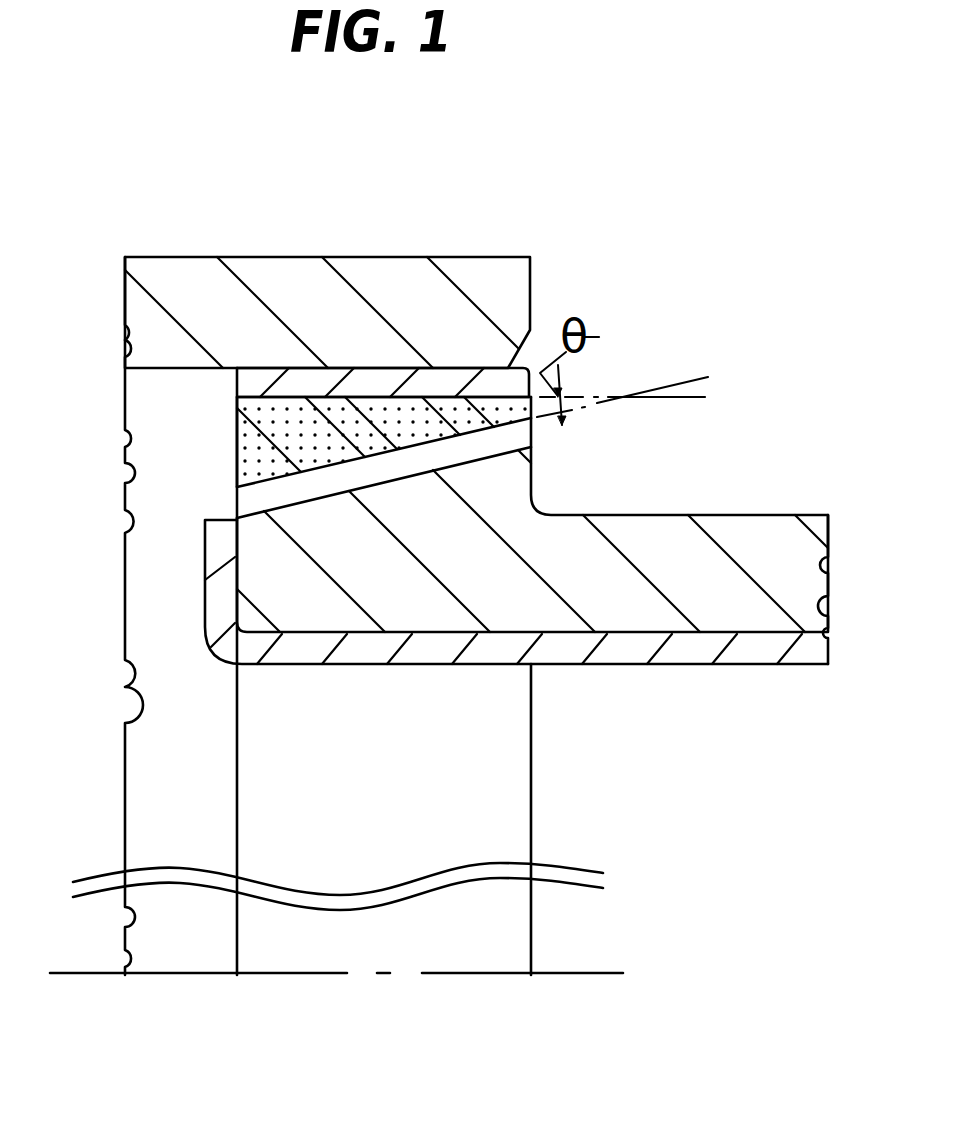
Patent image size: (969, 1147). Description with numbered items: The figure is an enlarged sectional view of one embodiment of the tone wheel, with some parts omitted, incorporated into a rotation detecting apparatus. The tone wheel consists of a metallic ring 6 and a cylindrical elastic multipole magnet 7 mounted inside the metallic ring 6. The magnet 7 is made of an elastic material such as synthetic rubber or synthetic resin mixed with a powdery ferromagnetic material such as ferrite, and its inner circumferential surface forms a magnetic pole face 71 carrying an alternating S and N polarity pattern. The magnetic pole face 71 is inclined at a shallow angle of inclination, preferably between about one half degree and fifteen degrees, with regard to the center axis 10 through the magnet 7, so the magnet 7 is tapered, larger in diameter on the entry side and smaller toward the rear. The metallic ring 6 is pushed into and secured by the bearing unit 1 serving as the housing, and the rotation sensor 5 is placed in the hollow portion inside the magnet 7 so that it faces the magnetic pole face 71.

The bearing unit 1 is at (298, 298).
The rotation sensor 5 is at (468, 585).
The metallic ring 6 is at (510, 382).
The cylindrical elastic multipole magnet 7 is at (273, 448).
The magnetic pole face 71 is at (505, 427).
The center axis 10 is at (590, 966).